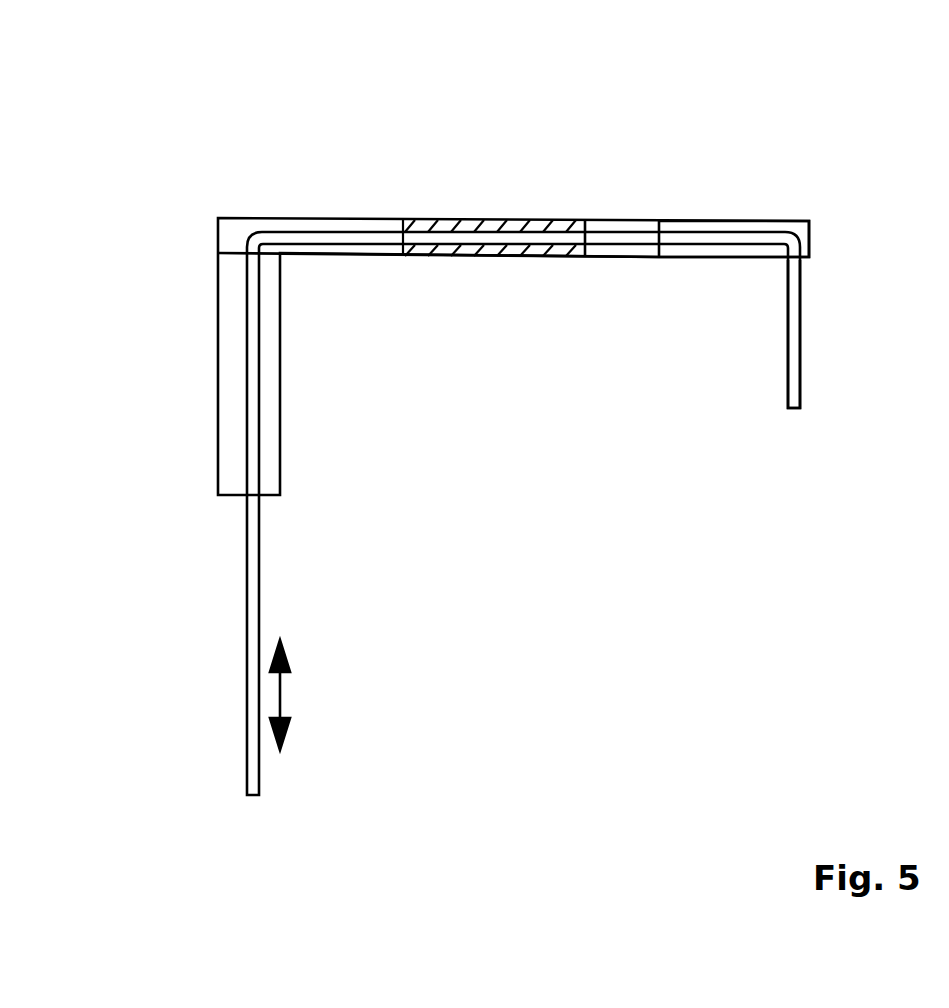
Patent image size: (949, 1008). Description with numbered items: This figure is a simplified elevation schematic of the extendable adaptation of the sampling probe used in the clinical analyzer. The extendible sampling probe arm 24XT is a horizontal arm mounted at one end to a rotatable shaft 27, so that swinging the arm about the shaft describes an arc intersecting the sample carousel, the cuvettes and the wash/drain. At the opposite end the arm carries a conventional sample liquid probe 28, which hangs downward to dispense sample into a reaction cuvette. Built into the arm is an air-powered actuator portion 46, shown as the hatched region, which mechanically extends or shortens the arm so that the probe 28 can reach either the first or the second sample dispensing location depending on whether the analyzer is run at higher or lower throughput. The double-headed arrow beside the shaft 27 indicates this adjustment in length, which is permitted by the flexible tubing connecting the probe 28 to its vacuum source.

The extendible sampling probe arm 24XT is at (725, 220).
The air-powered actuator portion 46 is at (505, 219).
The rotatable shaft 27 is at (217, 284).
The sample liquid probe 28 is at (800, 350).